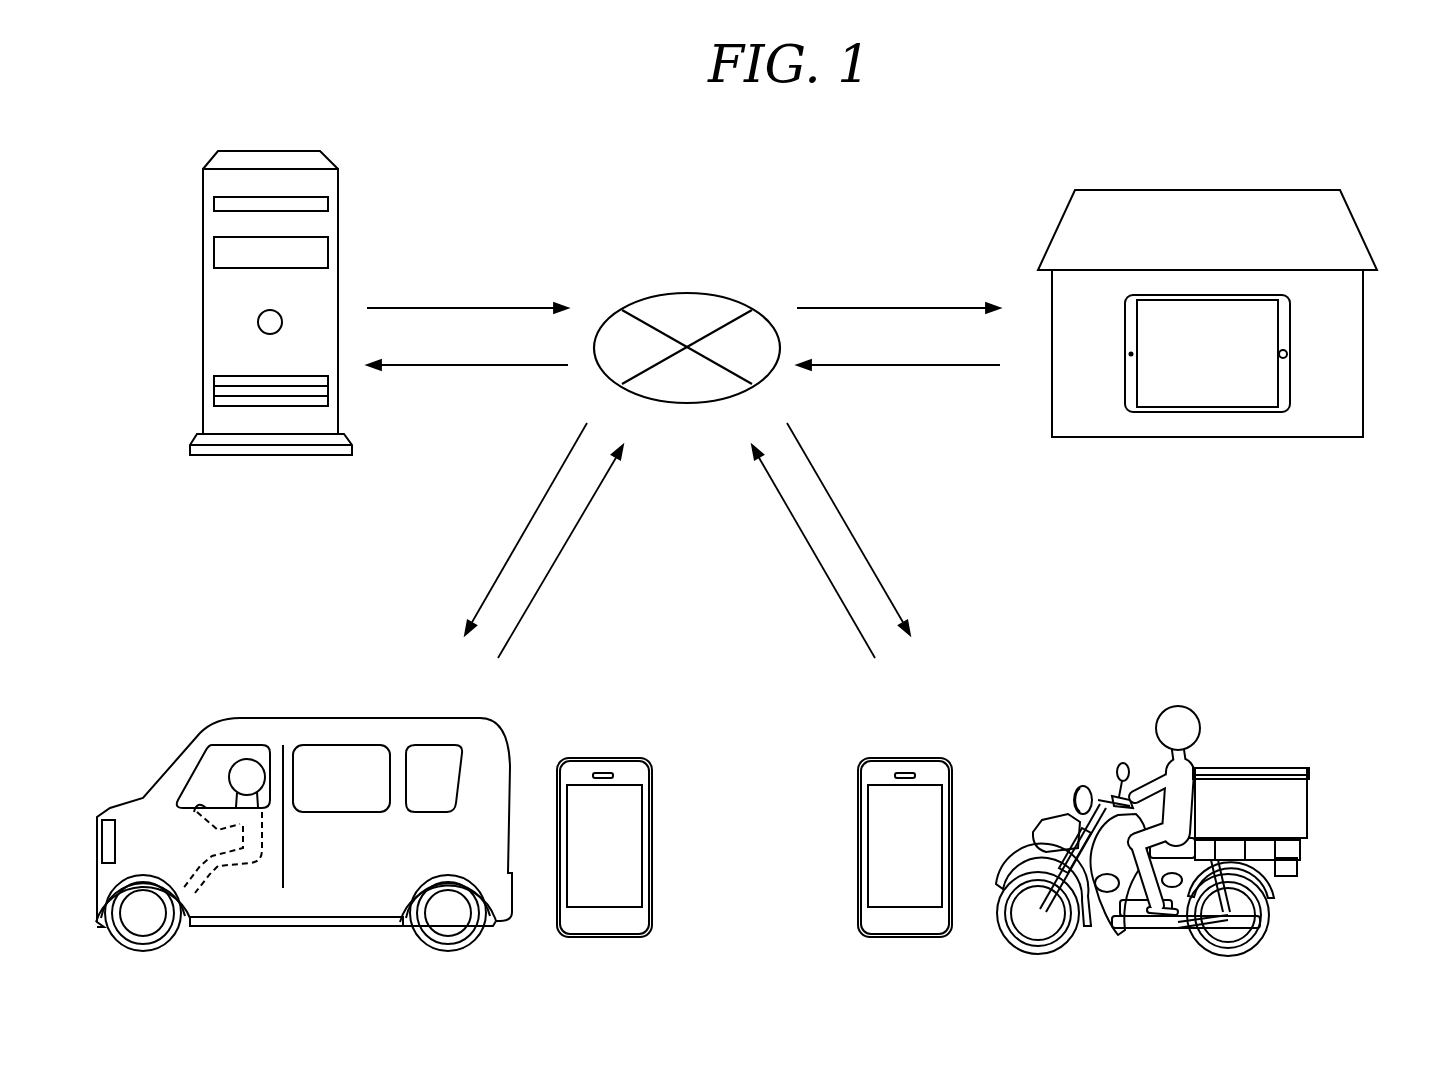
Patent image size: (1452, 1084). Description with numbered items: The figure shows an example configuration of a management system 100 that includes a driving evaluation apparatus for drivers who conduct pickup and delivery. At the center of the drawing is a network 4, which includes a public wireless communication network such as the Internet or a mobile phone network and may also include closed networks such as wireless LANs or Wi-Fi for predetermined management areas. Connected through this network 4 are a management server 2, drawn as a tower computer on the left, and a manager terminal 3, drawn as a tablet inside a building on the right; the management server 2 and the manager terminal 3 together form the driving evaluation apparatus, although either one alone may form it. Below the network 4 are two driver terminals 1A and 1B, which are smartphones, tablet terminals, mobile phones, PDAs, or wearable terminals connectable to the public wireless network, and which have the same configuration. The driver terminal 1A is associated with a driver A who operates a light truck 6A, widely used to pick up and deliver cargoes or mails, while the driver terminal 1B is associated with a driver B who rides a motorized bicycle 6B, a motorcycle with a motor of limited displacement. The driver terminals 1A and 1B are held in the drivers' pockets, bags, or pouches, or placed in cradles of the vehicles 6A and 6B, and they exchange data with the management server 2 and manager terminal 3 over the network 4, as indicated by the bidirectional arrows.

The management system 100 is at (1162, 146).
The management server 2 is at (340, 195).
The manager terminal 3 is at (1292, 327).
The network 4 is at (713, 295).
The light truck 6A is at (424, 716).
The driver A is at (230, 772).
The driver terminal 1A is at (627, 757).
The driver terminal 1B is at (929, 757).
The driver B is at (1182, 707).
The motorized bicycle 6B is at (1295, 768).